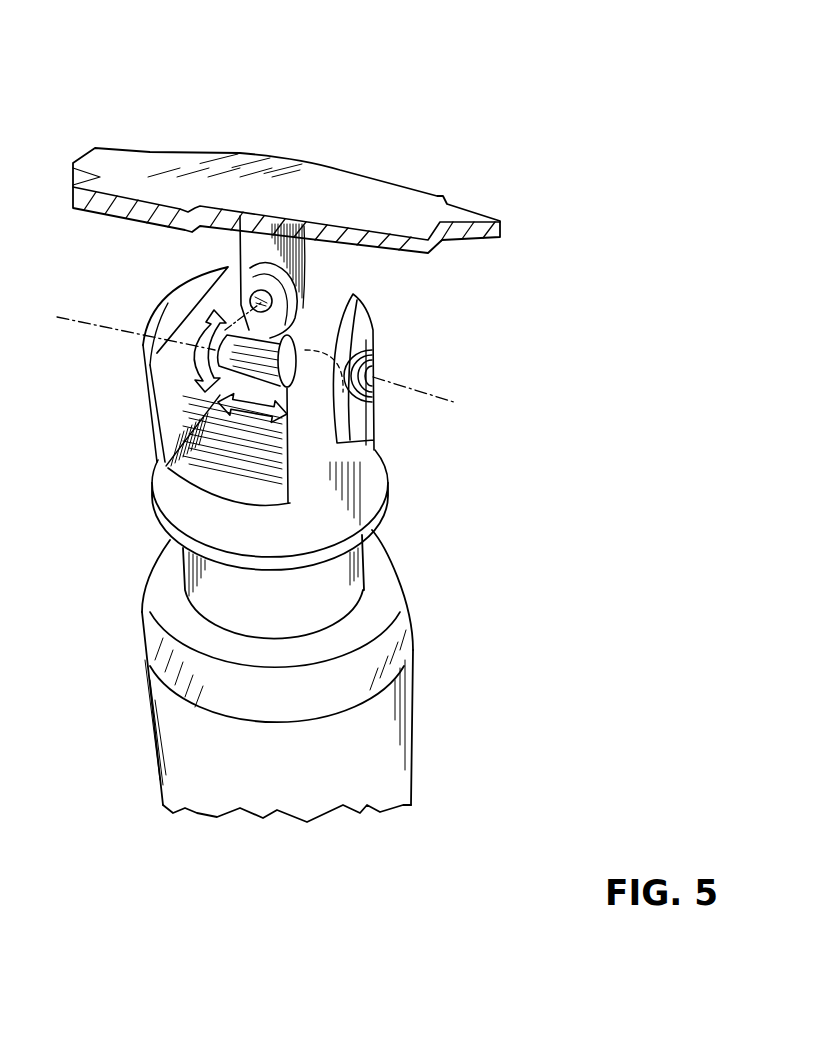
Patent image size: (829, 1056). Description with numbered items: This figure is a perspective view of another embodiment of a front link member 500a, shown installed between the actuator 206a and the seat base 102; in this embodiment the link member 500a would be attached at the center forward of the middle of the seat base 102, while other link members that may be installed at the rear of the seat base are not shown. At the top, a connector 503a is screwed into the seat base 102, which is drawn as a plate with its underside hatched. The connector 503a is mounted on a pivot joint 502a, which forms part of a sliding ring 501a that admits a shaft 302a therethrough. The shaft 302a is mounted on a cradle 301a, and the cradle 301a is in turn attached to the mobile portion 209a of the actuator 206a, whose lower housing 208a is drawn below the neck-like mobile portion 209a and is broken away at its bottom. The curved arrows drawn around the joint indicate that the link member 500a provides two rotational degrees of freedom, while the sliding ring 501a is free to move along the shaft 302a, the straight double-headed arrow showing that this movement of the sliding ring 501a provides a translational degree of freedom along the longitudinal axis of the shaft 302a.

The seat base 102 is at (417, 187).
The link member 500a is at (202, 260).
The connector 503a is at (300, 233).
The sliding ring 501a is at (256, 374).
The pivot joint 502a is at (262, 312).
The shaft 302a is at (373, 373).
The cradle 301a is at (197, 510).
The mobile portion 209a is at (347, 558).
The actuator 206a is at (482, 687).
The base housing 208a is at (412, 722).